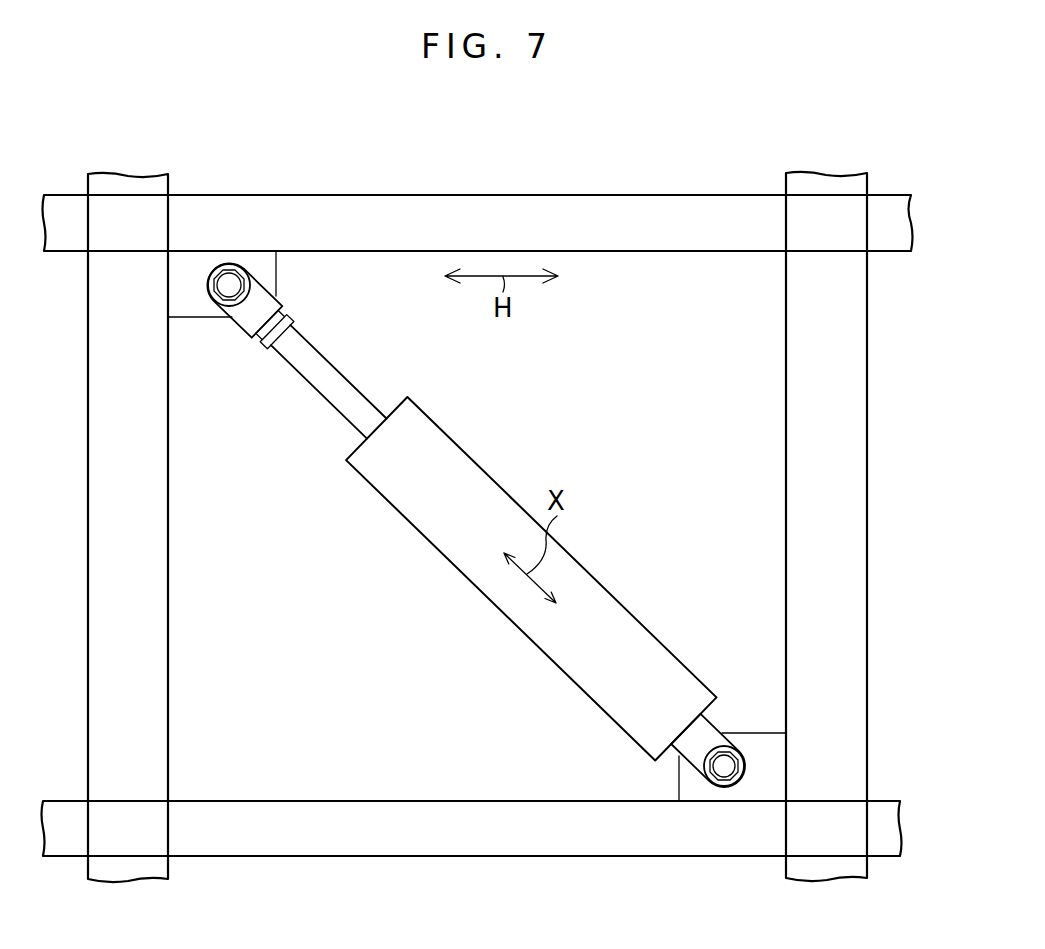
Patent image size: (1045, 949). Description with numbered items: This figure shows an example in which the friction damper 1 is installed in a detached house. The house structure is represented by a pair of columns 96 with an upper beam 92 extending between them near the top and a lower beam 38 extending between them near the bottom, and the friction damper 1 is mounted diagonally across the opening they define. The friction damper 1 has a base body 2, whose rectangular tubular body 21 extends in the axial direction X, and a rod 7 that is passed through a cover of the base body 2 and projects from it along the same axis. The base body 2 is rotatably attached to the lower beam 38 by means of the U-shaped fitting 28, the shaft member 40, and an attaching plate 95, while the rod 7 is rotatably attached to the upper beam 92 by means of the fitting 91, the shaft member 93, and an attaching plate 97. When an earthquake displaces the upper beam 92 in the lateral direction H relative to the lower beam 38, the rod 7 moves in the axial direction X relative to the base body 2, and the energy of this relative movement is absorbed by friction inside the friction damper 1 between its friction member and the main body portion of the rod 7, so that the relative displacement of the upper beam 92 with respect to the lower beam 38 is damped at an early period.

The friction damper 1 is at (482, 524).
The base body 2 is at (545, 592).
The tubular body 21 is at (464, 584).
The rod 7 is at (346, 361).
The fitting 91 is at (262, 295).
The shaft member 93 is at (229, 289).
The attaching plate 97 is at (186, 265).
The upper beam 92 is at (468, 215).
The columns 96 is at (118, 525).
The lower beam 38 is at (470, 838).
The attaching plate 95 is at (763, 788).
The U-shaped fitting 28 is at (693, 752).
The shaft member 40 is at (729, 761).